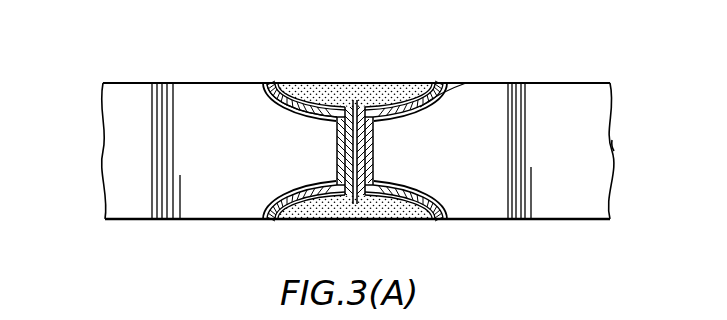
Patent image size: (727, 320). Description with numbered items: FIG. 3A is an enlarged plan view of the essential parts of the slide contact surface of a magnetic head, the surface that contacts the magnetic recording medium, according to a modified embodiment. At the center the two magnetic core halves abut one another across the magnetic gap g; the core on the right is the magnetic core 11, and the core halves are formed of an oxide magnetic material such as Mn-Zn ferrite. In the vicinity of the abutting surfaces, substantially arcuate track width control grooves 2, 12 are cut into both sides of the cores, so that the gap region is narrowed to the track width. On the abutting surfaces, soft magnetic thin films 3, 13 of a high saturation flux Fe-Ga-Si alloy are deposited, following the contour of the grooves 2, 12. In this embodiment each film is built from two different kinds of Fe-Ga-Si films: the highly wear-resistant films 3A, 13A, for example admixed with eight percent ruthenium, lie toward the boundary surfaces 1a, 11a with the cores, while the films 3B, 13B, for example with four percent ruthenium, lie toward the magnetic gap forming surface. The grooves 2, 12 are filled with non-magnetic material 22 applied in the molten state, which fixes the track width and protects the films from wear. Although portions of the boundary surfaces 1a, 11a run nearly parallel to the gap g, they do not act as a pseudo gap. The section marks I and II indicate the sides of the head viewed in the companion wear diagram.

The boundary surface 1a is at (345, 152).
The boundary surface 11a is at (368, 152).
The magnetic core 11 is at (585, 83).
The track width control groove 2 is at (290, 219).
The track width control groove 12 is at (428, 219).
The soft magnetic thin film 3 is at (315, 34).
The soft magnetic thin film 3A is at (272, 83).
The soft magnetic thin film 3B is at (285, 83).
The soft magnetic thin film 13 is at (535, 34).
The soft magnetic thin film 13A is at (468, 83).
The soft magnetic thin film 13B is at (433, 83).
The non-magnetic material 22 is at (385, 83).
The magnetic gap g is at (354, 83).
The first fiber side I is at (92, 162).
The second fiber side II is at (616, 148).